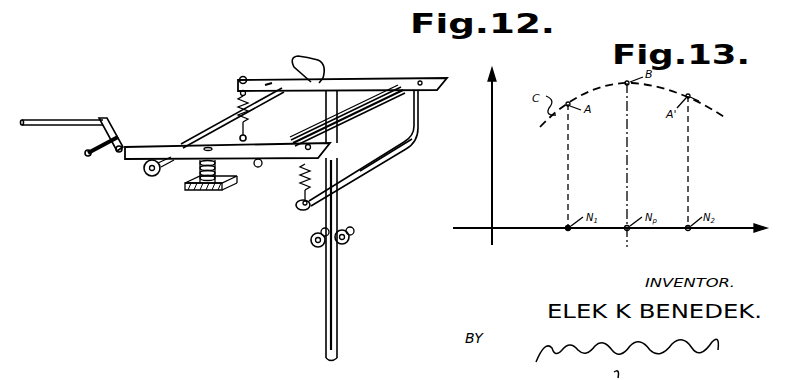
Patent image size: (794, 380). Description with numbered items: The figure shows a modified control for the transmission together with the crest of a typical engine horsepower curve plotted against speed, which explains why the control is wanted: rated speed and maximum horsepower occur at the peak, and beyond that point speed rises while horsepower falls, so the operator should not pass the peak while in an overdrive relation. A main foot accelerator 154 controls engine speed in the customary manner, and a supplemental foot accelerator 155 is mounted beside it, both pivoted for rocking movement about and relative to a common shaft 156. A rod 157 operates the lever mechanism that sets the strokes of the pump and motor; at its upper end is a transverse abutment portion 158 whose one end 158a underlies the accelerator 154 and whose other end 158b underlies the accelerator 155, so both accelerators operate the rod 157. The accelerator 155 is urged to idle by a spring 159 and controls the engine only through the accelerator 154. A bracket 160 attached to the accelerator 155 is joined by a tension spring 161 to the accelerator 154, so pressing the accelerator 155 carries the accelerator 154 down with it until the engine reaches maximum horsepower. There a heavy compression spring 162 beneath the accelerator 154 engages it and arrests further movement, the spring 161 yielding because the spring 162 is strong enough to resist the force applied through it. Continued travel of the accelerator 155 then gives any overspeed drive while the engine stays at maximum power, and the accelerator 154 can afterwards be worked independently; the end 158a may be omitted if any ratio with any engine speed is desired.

The main foot accelerator 154 is at (237, 161).
The supplemental foot accelerator 155 is at (333, 84).
The common shaft 156 is at (232, 120).
The rod 157 is at (329, 262).
The transverse abutment portion 158 is at (349, 106).
The end of abutment portion 158a is at (258, 167).
The end of abutment portion 158b is at (398, 80).
The spring 159 is at (240, 95).
The bracket 160 is at (397, 152).
The tension spring 161 is at (296, 199).
The heavy compression spring 162 is at (200, 172).